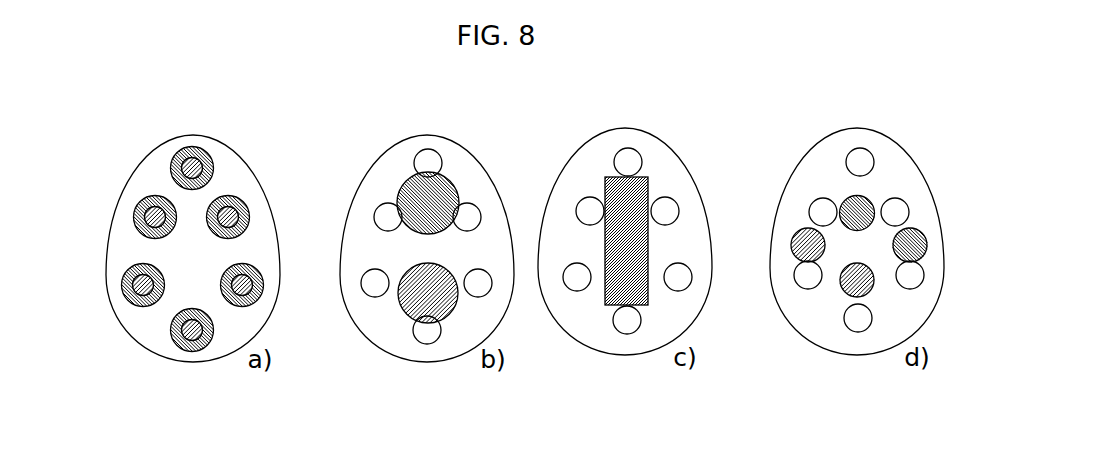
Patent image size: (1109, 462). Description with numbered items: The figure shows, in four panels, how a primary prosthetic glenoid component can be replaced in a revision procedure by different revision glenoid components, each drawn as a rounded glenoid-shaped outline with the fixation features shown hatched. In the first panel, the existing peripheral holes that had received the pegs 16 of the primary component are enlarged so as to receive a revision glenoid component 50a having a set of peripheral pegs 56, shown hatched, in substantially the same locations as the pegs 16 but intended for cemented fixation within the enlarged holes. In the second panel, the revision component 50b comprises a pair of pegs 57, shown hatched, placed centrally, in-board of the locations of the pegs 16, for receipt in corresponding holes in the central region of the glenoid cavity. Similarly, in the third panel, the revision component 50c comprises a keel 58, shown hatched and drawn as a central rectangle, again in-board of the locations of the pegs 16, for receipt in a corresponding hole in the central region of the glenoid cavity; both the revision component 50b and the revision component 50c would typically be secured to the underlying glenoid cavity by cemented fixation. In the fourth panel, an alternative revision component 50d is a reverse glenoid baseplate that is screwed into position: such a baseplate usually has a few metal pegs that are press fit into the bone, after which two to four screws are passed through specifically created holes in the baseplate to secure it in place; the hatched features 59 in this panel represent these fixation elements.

The pegs 16 is at (153, 207).
The revision glenoid component 50a is at (237, 134).
The revision component 50b is at (478, 134).
The revision component 50c is at (691, 142).
The revision component 50d is at (903, 136).
The peripheral pegs 56 is at (133, 298).
The pegs 57 is at (423, 207).
The keel 58 is at (627, 188).
The additional lumen 59 is at (807, 233).